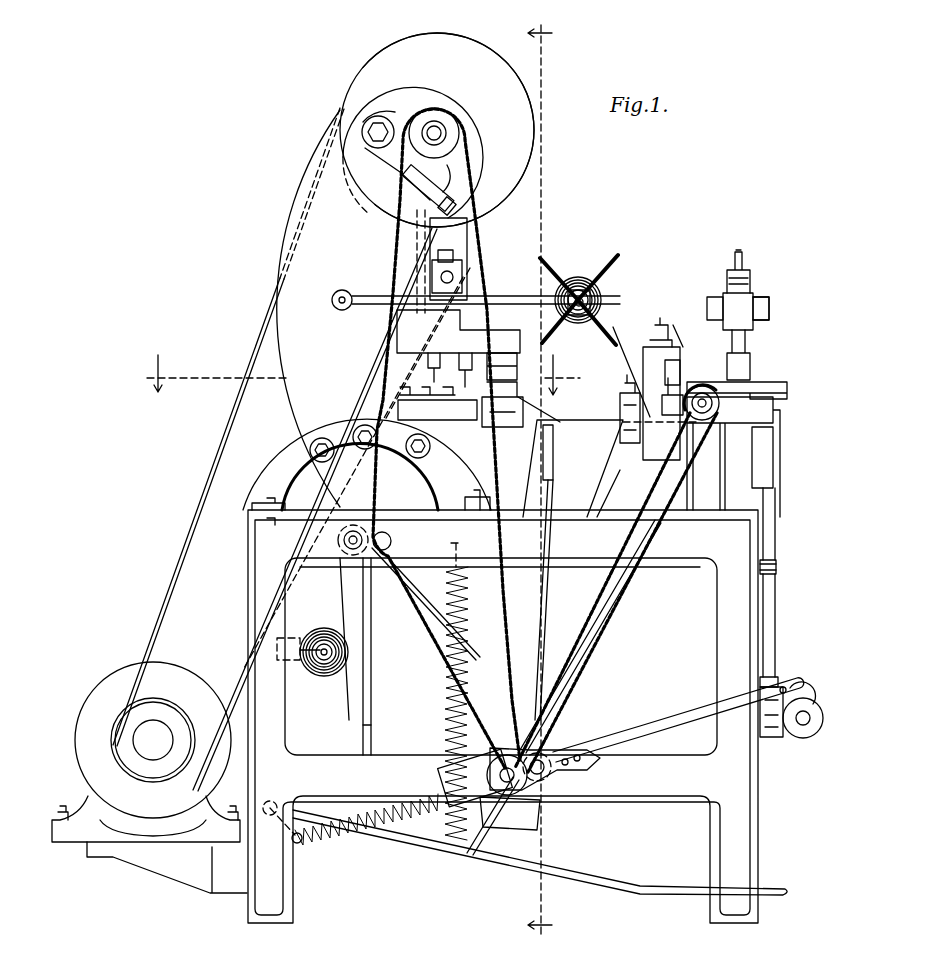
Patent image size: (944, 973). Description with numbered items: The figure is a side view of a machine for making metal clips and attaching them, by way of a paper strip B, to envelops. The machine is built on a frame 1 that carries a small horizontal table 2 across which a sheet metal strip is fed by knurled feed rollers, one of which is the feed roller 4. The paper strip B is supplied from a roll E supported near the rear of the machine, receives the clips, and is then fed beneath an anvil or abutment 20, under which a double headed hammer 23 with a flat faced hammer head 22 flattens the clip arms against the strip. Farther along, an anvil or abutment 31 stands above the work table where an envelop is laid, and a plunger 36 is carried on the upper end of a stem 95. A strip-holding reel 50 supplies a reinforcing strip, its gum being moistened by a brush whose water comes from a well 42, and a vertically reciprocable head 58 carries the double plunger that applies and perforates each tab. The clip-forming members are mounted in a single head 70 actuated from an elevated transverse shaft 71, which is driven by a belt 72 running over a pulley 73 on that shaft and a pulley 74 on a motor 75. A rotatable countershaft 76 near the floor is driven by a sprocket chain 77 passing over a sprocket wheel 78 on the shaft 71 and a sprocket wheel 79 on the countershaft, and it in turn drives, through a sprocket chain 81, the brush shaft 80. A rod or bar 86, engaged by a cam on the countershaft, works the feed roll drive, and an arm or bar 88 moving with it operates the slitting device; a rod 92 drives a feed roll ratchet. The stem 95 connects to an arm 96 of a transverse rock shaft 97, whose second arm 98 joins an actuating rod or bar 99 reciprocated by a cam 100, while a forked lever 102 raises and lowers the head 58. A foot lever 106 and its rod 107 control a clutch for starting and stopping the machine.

The frame 1 is at (285, 322).
The horizontal table 2 is at (343, 403).
The feed roller 4 is at (352, 375).
The anvil or abutment 20 is at (556, 420).
The second hammer head 22 is at (554, 442).
The double headed hammer 23 is at (543, 490).
The anvil or abutment 31 is at (788, 391).
The plunger 36 is at (775, 468).
The well 42 is at (658, 340).
The strip-holding reel 50 is at (584, 275).
The vertically reciprocable head 58 is at (742, 315).
The head 70 is at (476, 318).
The elevated transverse shaft 71 is at (436, 126).
The belt 72 is at (178, 560).
The pulley 73 is at (372, 75).
The pulley 74 is at (158, 710).
The motor 75 is at (105, 690).
The rotatable countershaft 76 is at (495, 805).
The sprocket chain 77 is at (400, 218).
The sprocket wheel 78 is at (452, 120).
The sprocket wheel 79 is at (525, 808).
The brush shaft 80 is at (703, 425).
The sprocket chain 81 is at (616, 612).
The rod or bar 86 is at (432, 660).
The arm or bar 88 is at (440, 615).
The rod 92 is at (648, 548).
The stem 95 is at (778, 630).
The arm 96 is at (778, 737).
The transverse rock shaft 97 is at (805, 738).
The second arm 98 is at (808, 688).
The actuating rod or bar 99 is at (668, 722).
The cam 100 is at (548, 745).
The forked lever 102 is at (770, 305).
The foot lever 106 is at (655, 900).
The rod 107 is at (365, 728).
The paper strip B is at (343, 593).
The roll E is at (330, 675).